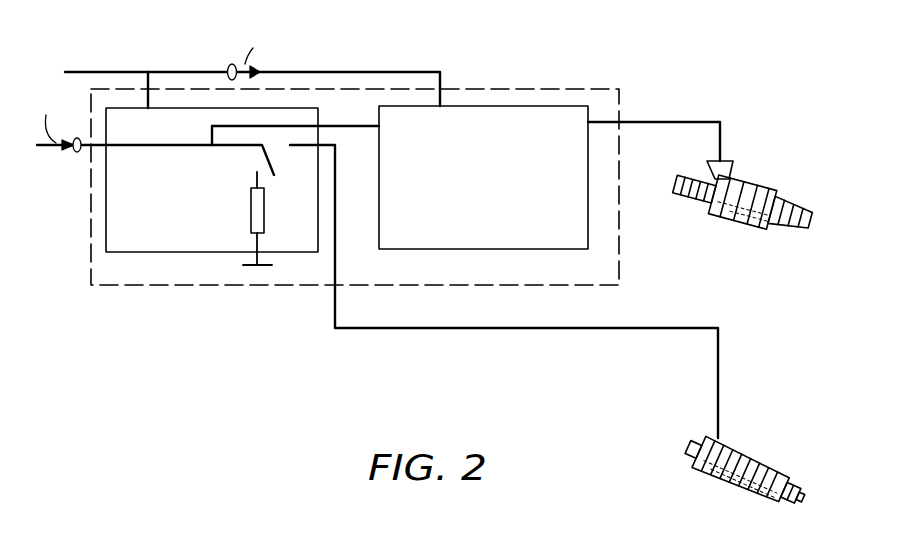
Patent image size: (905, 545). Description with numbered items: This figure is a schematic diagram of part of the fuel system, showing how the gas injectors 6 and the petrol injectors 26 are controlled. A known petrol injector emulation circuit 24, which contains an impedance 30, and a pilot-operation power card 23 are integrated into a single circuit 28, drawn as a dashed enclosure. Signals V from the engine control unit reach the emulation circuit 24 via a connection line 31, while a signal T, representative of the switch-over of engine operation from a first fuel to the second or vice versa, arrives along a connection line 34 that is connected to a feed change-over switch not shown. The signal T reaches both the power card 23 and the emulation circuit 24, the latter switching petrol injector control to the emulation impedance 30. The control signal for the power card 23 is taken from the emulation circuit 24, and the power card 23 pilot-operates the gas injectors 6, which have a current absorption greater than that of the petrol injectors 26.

The gas injector 6 is at (750, 185).
The pilot-operation power card 23 is at (490, 188).
The petrol injector emulation circuit 24 is at (155, 237).
The petrol injector 26 is at (762, 496).
The single circuit 28 is at (573, 85).
The impedance 30 is at (260, 213).
The connection line 31 is at (46, 150).
The connection line 34 is at (395, 70).